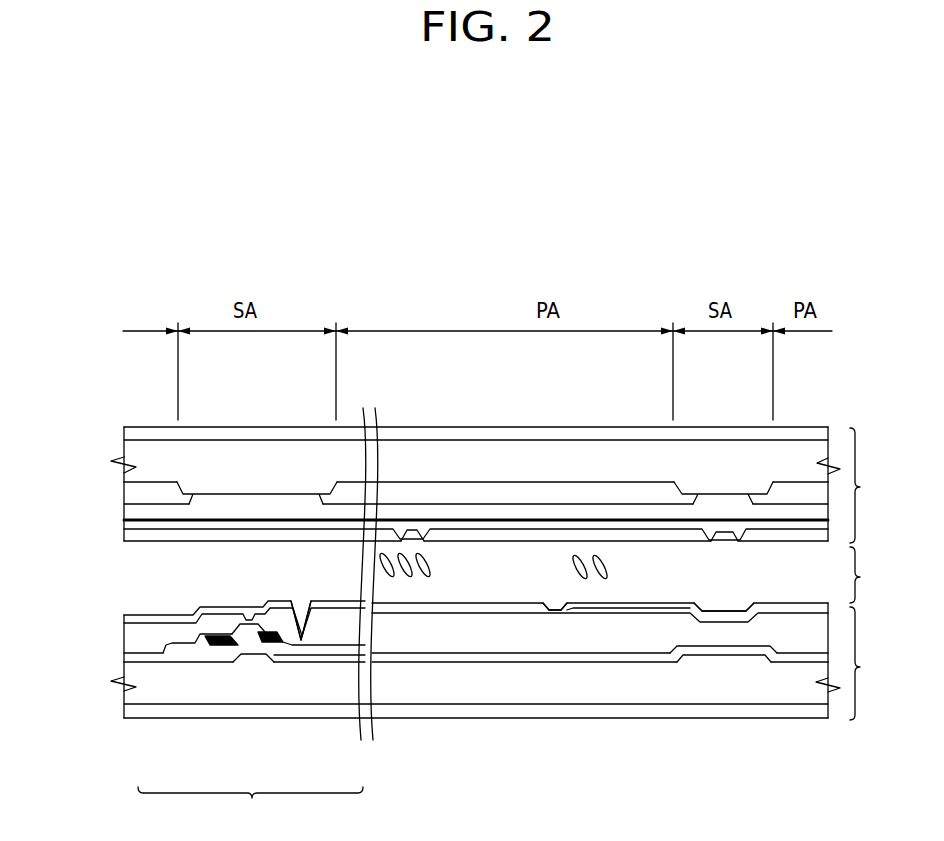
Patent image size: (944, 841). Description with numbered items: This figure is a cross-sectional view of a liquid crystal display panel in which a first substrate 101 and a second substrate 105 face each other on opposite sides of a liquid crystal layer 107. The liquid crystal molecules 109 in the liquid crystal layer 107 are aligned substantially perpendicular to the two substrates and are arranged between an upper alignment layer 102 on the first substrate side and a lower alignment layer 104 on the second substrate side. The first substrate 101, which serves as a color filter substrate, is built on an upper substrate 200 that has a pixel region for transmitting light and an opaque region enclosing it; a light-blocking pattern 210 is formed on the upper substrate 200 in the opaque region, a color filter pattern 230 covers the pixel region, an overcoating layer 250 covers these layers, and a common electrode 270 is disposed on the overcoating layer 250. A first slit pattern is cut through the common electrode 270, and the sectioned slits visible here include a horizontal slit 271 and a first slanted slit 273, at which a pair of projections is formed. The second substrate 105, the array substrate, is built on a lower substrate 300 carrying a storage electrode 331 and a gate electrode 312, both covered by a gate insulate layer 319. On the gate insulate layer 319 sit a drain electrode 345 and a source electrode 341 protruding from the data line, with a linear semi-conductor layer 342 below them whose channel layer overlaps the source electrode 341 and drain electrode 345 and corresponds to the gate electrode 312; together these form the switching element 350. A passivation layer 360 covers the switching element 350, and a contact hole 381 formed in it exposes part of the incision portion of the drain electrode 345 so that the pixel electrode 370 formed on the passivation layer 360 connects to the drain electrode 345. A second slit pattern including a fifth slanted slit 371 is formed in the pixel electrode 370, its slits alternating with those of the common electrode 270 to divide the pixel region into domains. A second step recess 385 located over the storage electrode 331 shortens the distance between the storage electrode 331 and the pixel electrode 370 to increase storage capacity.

The first substrate 101 is at (506, 485).
The upper alignment layer 102 is at (124, 533).
The upper insulating layer of lower panel 104 is at (133, 617).
The second substrate 105 is at (506, 661).
The liquid crystal layer 107 is at (876, 575).
The liquid crystal molecules 109 is at (584, 557).
The upper substrate 200 is at (473, 432).
The light-blocking pattern 210 is at (242, 487).
The color filter pattern 230 is at (535, 493).
The overcoating layer 250 is at (413, 511).
The common electrode 270 is at (650, 524).
The horizontal slit 271 is at (722, 536).
The first slanted slit 273 is at (415, 540).
The lower substrate 300 is at (126, 698).
The gate electrode 312 is at (248, 662).
The gate insulate layer 319 is at (341, 658).
The storage electrode 331 is at (725, 662).
The source electrode 341 is at (163, 655).
The linear semi-conductor layer 342 is at (227, 645).
The drain electrode 345 is at (302, 650).
The switching element 350 is at (250, 806).
The passivation layer 360 is at (127, 637).
The pixel electrode 370 is at (623, 615).
The fifth slanted slit 371 is at (557, 615).
The contact hole 381 is at (300, 604).
The second step recess 385 is at (731, 604).